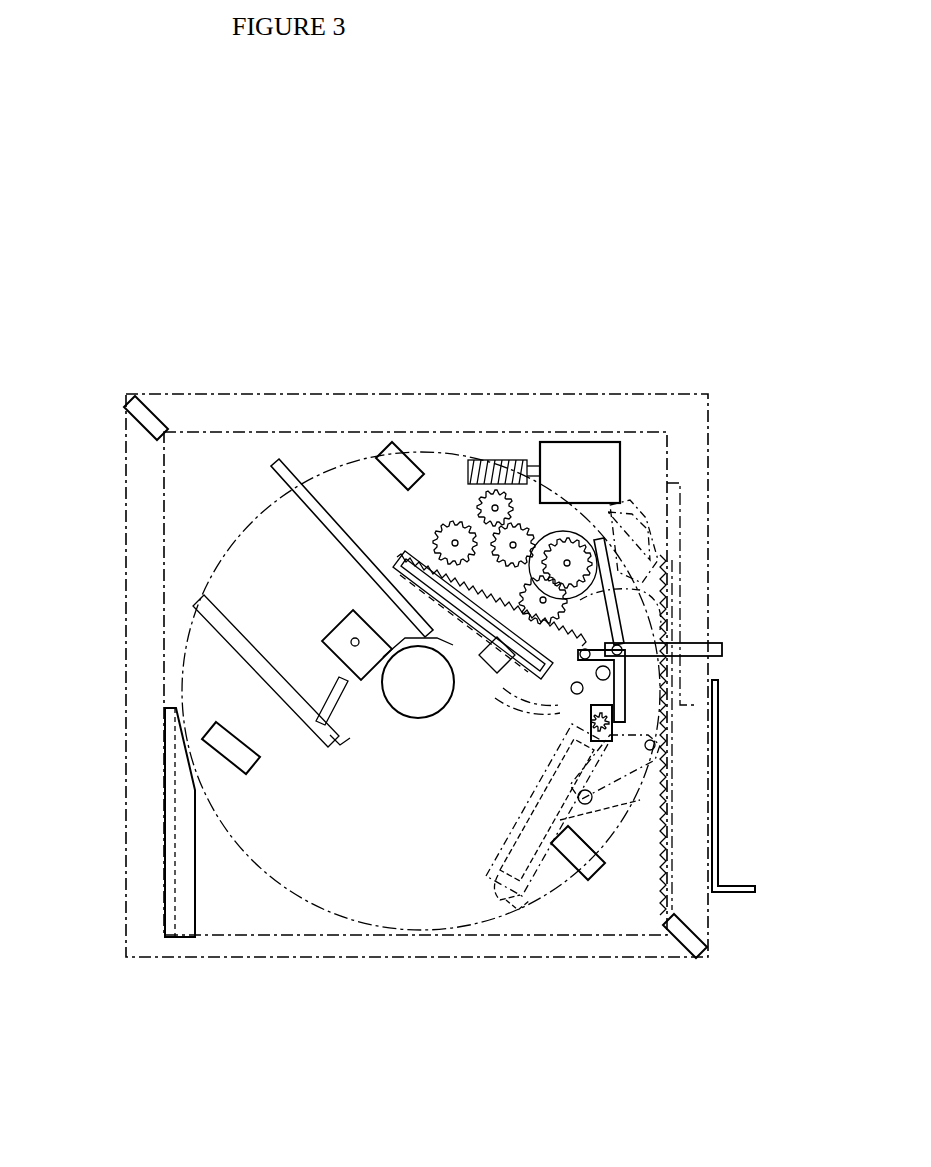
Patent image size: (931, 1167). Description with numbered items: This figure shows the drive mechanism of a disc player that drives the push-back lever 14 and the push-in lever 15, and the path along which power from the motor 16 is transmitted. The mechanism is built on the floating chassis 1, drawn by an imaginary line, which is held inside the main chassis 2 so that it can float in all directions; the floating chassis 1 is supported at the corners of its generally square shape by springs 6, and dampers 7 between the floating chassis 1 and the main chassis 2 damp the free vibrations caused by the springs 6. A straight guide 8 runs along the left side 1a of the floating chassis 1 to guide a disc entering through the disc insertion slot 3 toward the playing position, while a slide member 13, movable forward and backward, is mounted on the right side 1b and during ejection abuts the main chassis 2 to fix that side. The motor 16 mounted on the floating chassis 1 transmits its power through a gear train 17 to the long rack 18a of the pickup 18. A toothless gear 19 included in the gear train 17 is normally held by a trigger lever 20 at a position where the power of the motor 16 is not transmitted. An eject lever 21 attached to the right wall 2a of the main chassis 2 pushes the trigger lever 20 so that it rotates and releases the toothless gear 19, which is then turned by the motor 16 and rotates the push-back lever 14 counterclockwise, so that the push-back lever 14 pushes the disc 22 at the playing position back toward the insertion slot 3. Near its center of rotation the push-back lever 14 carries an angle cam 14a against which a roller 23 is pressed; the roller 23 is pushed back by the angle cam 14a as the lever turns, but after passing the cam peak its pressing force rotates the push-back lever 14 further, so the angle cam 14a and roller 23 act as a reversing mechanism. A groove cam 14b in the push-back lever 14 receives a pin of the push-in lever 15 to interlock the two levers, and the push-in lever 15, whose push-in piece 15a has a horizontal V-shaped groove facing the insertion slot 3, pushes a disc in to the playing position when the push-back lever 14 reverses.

The floating chassis 1 is at (278, 940).
The left side of the floating chassis 1a is at (165, 622).
The right side of the floating chassis 1b is at (680, 447).
The main chassis 2 is at (122, 722).
The right wall of the main chassis 2a is at (712, 916).
The disc insertion slot 3 is at (420, 937).
The springs 6 is at (138, 423).
The dampers 7 is at (412, 445).
The straight guide 8 is at (178, 888).
The slide member 13 is at (705, 510).
The push-back lever 14 is at (660, 553).
The angle cam 14a is at (490, 690).
The groove cam 14b is at (450, 712).
The push-in lever 15 is at (492, 855).
The push-in piece 15a is at (518, 908).
The motor 16 is at (578, 442).
The gear train 17 is at (512, 452).
The pickup 18 is at (340, 708).
The long rack 18a is at (410, 535).
The toothless gear 19 is at (560, 535).
The trigger lever 20 is at (725, 648).
The eject lever 21 is at (758, 889).
The disc 22 is at (290, 885).
The roller 23 is at (560, 740).